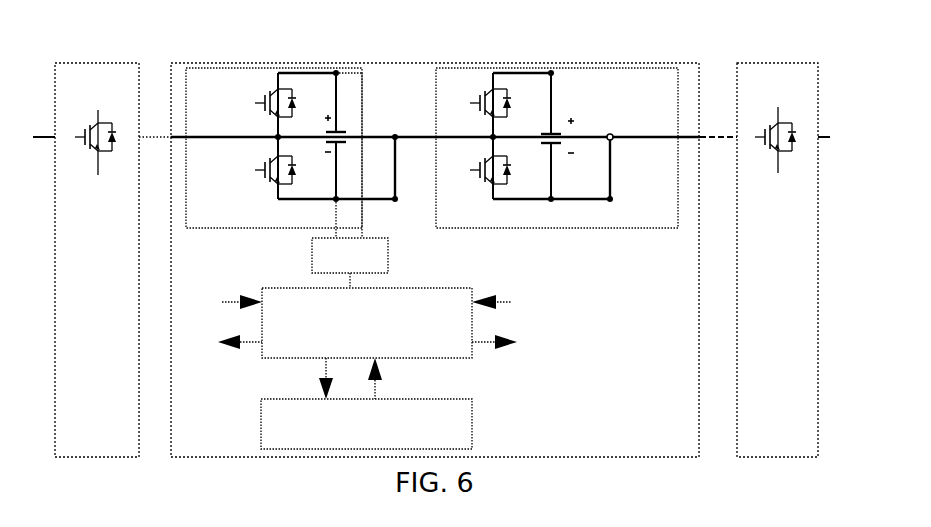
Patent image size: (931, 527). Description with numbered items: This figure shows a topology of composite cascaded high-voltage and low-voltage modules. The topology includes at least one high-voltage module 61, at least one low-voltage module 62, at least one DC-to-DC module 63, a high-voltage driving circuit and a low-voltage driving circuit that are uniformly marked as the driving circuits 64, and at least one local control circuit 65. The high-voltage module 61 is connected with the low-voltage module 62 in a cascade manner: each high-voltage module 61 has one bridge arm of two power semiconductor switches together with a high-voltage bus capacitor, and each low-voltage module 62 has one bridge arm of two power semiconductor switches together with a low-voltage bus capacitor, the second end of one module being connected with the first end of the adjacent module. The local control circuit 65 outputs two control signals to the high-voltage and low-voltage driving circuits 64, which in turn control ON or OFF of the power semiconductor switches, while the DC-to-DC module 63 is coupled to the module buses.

The high-voltage module 61 is at (585, 66).
The low-voltage module 62 is at (362, 68).
The DC-to-DC module 63 is at (388, 262).
The high-voltage driving circuit and low-voltage driving circuit 64 is at (448, 288).
The local control circuit 65 is at (472, 418).